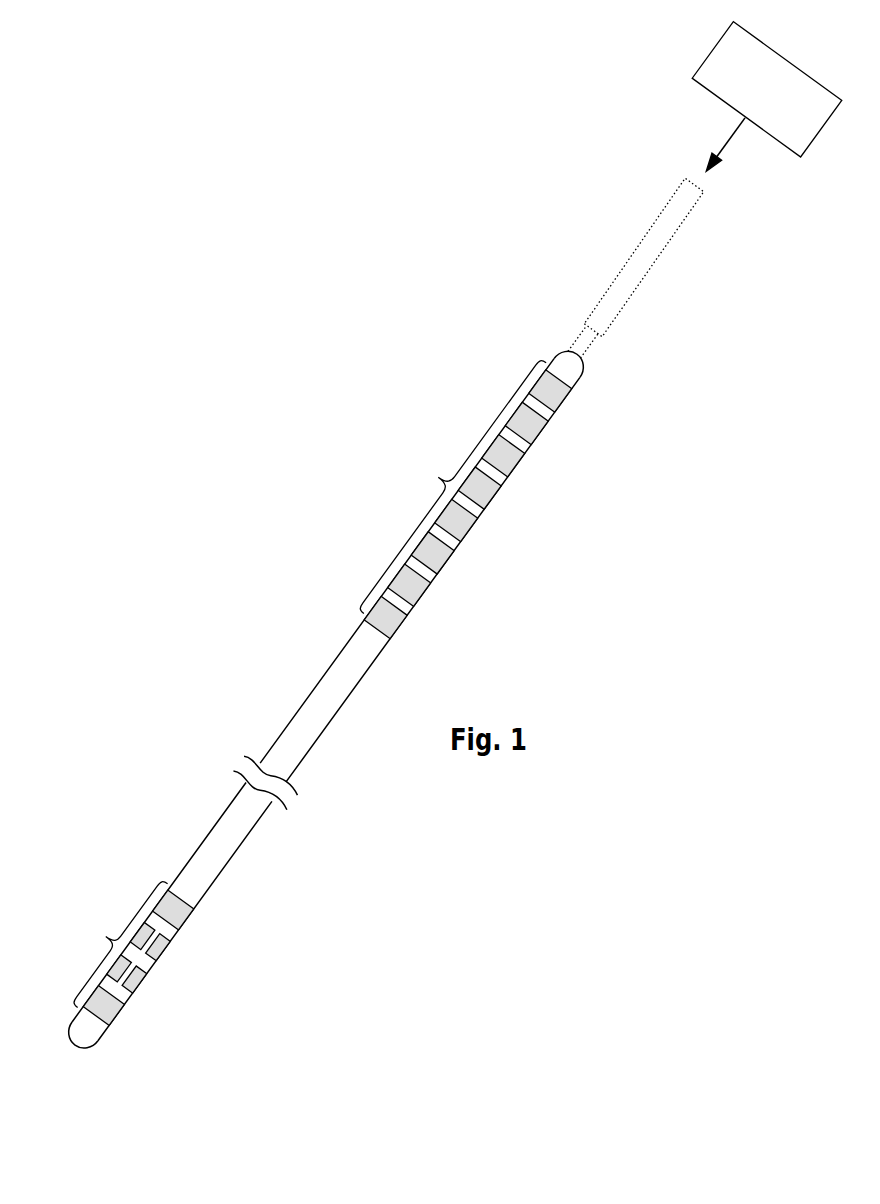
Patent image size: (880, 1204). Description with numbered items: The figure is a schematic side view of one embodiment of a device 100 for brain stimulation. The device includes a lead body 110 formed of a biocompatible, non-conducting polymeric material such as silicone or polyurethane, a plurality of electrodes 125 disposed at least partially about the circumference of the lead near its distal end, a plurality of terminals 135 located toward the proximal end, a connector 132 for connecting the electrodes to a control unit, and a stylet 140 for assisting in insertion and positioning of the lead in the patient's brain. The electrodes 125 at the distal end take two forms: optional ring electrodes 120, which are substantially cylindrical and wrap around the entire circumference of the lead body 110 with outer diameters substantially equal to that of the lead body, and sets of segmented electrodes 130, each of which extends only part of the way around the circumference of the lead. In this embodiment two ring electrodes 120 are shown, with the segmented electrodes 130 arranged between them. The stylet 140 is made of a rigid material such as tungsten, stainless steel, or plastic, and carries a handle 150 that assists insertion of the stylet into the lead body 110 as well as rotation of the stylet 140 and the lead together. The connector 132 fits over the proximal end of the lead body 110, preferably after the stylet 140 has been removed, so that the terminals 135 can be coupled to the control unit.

The device for brain stimulation 100 is at (256, 539).
The lead body 110 is at (307, 706).
The ring electrode 120 is at (187, 913).
The plurality of electrodes 125 is at (146, 949).
The segmented electrode 130 is at (135, 977).
The connector 132 is at (705, 62).
The terminals 135 is at (460, 495).
The stylet 140 is at (578, 337).
The handle 150 is at (635, 257).